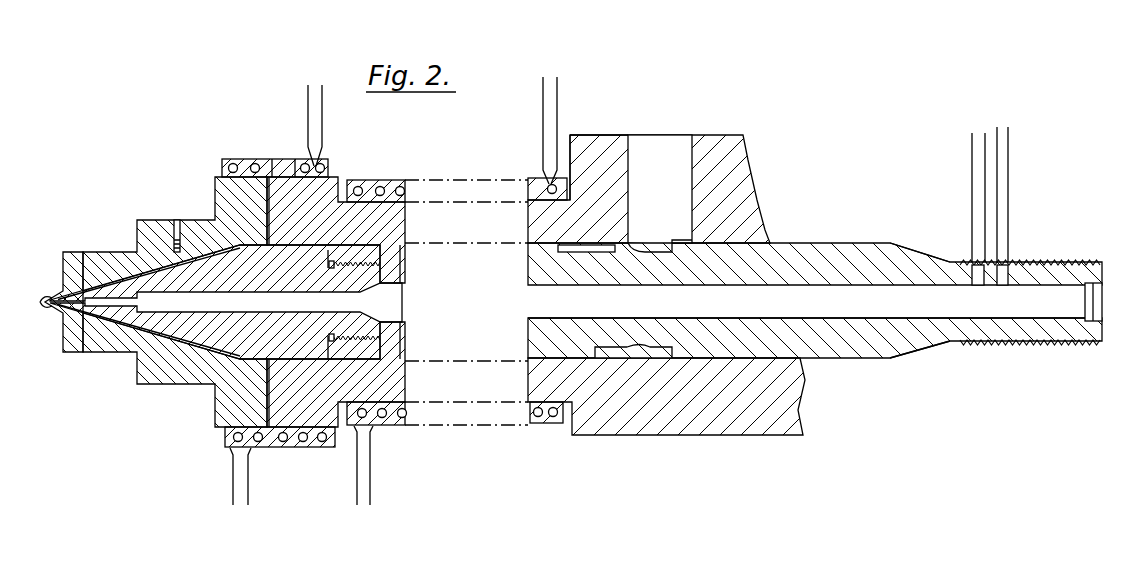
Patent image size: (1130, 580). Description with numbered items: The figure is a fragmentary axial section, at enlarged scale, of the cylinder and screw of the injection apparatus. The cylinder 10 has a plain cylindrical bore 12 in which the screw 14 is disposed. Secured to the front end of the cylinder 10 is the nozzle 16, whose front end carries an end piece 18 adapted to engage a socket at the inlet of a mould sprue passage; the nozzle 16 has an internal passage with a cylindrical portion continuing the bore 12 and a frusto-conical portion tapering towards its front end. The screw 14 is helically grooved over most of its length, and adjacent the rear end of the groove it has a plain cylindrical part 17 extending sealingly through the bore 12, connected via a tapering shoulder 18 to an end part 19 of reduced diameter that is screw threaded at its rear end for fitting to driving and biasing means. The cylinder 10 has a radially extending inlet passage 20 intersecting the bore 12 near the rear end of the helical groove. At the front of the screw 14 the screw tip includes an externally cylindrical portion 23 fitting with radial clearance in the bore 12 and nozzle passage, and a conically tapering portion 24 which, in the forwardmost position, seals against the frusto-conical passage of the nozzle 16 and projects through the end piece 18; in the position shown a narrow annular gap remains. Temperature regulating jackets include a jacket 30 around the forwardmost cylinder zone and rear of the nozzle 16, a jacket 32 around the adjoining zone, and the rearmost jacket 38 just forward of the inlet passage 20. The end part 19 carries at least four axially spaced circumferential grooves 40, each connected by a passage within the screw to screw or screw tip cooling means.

The cylinder 10 is at (706, 422).
The bore 12 is at (628, 348).
The screw 14 is at (590, 268).
The nozzle 16 is at (109, 262).
The plain cylindrical part 17 is at (807, 342).
The end piece 18 is at (73, 258).
The end part 19 is at (1047, 325).
The inlet passage 20 is at (631, 166).
The externally cylindrical portion 23 is at (305, 350).
The conically tapering portion 24 is at (127, 347).
The jacket 30 is at (246, 162).
The jacket 32 is at (368, 182).
The jacket 38 is at (549, 426).
The circumferential grooves 40 is at (1009, 346).